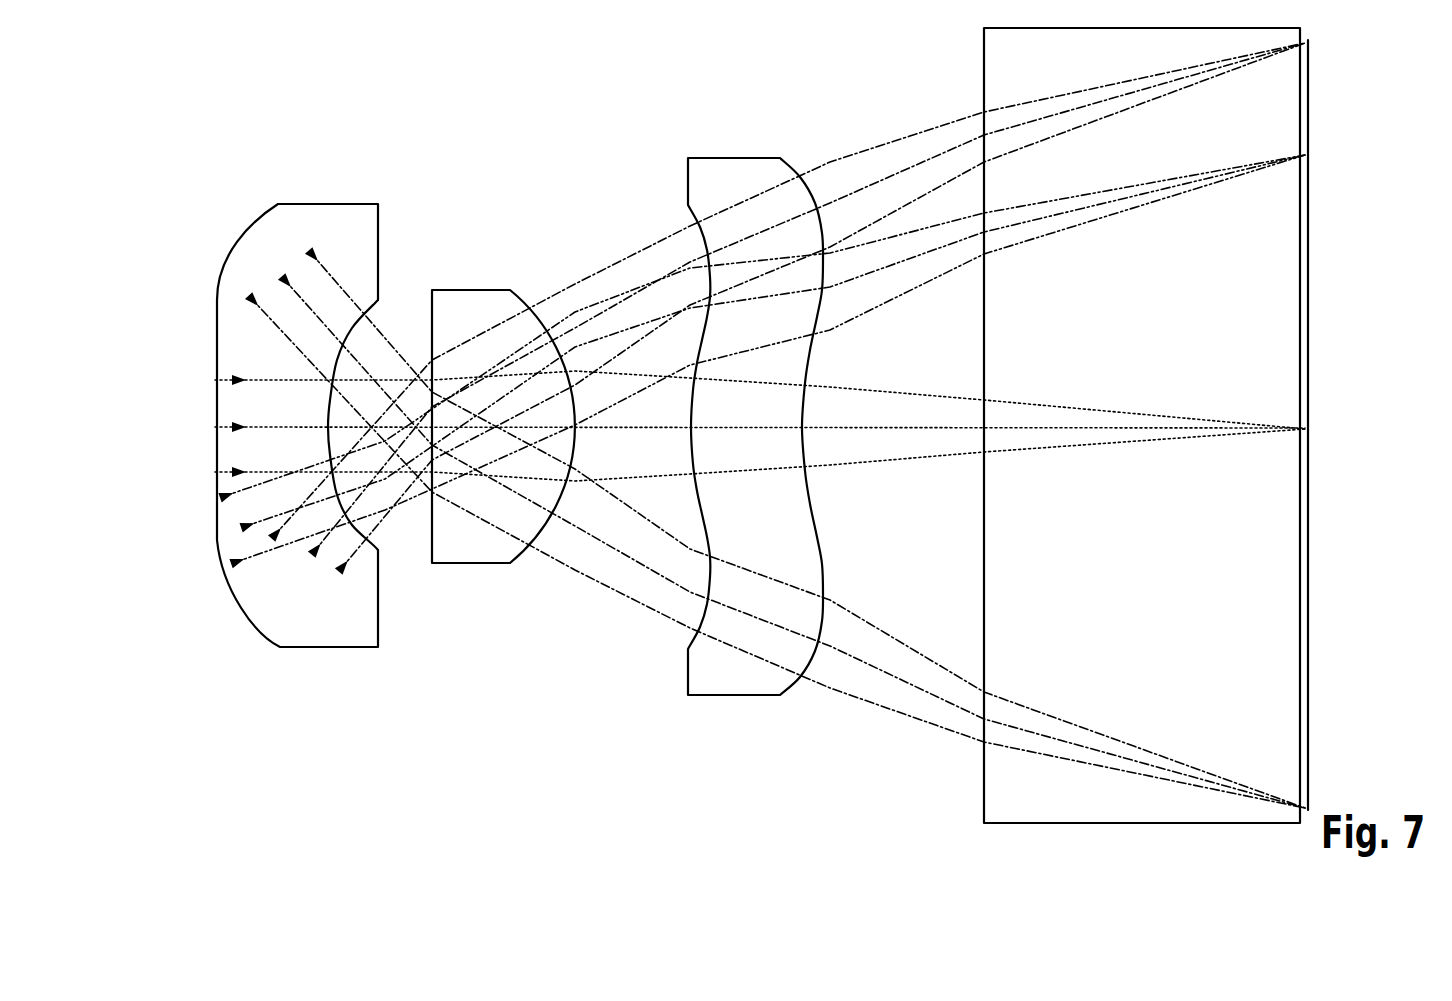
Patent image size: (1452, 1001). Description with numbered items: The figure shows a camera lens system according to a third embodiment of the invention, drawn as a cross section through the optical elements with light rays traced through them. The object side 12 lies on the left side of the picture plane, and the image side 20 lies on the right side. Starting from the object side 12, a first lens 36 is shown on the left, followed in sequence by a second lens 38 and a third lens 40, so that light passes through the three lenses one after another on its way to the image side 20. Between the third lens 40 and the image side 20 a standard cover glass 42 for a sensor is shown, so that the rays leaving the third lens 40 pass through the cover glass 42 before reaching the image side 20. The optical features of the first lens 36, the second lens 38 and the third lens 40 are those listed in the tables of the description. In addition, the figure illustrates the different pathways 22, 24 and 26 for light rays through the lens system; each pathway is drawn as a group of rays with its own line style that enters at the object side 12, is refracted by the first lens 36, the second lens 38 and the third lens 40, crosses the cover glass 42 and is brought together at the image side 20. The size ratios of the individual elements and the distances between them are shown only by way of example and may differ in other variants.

The object side 12 is at (92, 505).
The image side 20 is at (1334, 497).
The pathway for light rays 22 is at (232, 376).
The pathway for light rays 24 is at (243, 527).
The pathway for light rays 26 is at (310, 252).
The first lens 36 is at (352, 640).
The second lens 38 is at (462, 550).
The third lens 40 is at (728, 706).
The standard cover glass 42 is at (1038, 805).